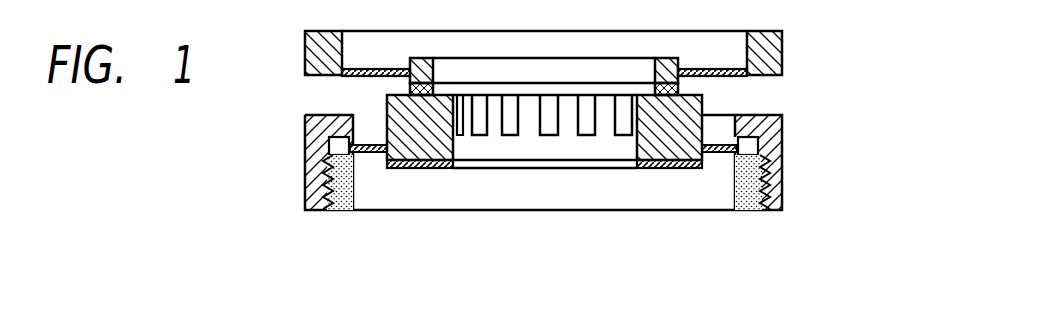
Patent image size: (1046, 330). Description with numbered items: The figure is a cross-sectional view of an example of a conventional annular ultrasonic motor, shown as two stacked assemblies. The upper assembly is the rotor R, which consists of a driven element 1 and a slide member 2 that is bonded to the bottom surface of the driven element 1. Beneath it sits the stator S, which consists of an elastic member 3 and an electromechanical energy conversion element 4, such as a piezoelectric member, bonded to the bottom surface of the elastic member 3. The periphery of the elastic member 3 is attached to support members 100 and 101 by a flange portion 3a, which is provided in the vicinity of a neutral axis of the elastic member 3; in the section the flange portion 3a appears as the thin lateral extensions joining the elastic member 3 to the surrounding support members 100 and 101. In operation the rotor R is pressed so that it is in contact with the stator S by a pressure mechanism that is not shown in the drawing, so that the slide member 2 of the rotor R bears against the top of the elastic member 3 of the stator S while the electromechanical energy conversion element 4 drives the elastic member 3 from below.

The driven element 1 is at (773, 39).
The slide member 2 is at (682, 85).
The elastic member 3 is at (397, 105).
The flange portion 3a is at (718, 148).
The electromechanical energy conversion element 4 is at (413, 170).
The support member 100 is at (767, 178).
The support member 101 is at (743, 206).
The stator S is at (258, 72).
The rotor R is at (833, 10).